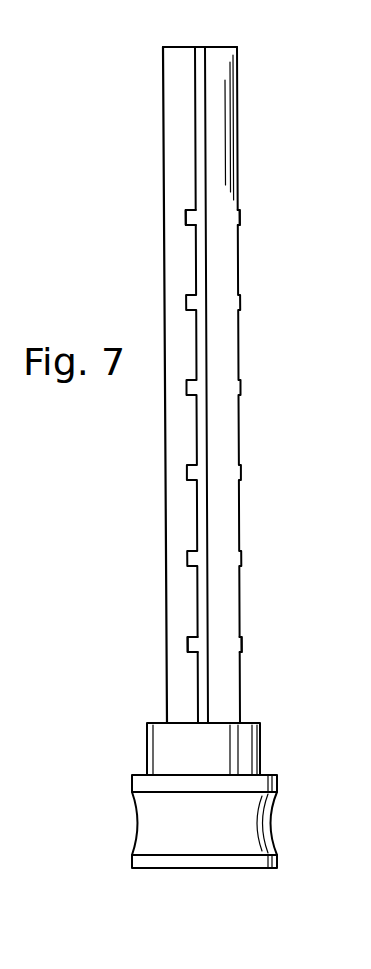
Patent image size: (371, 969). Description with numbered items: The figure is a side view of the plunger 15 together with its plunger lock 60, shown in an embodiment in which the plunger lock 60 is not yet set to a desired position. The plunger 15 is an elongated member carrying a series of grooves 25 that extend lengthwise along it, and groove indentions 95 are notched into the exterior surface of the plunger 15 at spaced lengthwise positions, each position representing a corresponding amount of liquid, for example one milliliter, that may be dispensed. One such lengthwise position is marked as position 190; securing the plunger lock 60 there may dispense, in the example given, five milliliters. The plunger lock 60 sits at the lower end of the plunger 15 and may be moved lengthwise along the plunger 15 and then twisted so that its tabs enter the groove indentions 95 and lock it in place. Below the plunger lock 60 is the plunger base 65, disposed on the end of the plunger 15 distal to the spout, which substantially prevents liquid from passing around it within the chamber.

The plunger 15 is at (238, 138).
The grooves 25 is at (200, 263).
The groove indentions 95 is at (165, 213).
The position 190 is at (180, 650).
The plunger lock 60 is at (261, 748).
The plunger base 65 is at (232, 823).